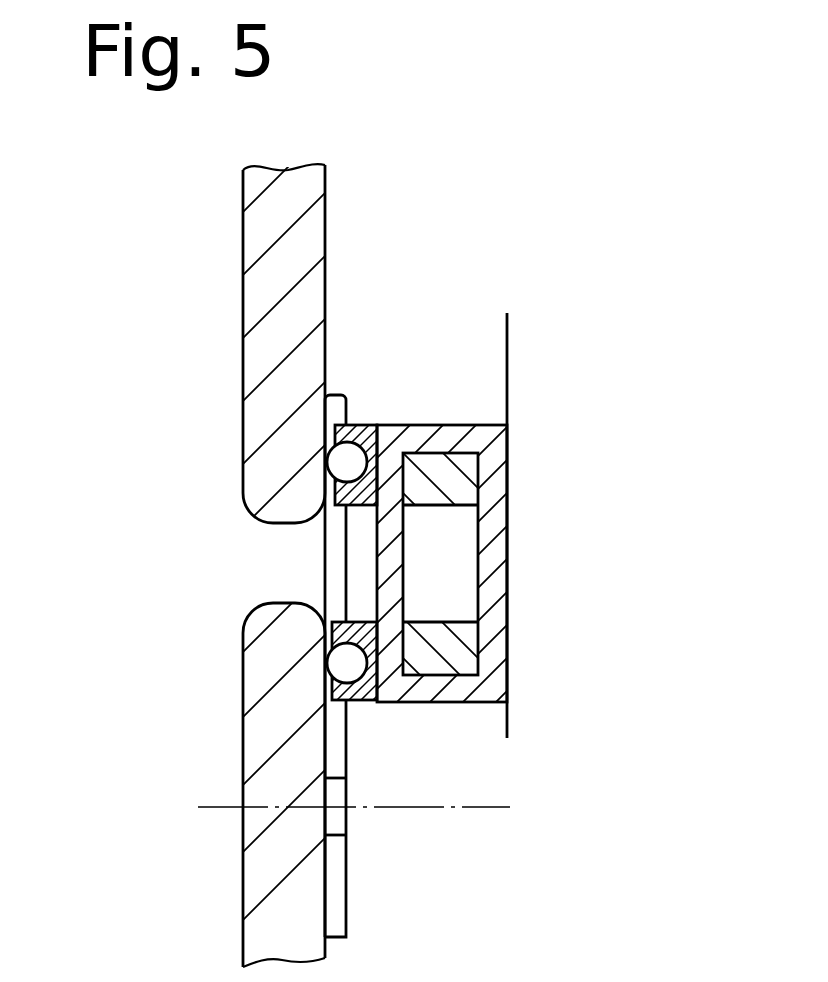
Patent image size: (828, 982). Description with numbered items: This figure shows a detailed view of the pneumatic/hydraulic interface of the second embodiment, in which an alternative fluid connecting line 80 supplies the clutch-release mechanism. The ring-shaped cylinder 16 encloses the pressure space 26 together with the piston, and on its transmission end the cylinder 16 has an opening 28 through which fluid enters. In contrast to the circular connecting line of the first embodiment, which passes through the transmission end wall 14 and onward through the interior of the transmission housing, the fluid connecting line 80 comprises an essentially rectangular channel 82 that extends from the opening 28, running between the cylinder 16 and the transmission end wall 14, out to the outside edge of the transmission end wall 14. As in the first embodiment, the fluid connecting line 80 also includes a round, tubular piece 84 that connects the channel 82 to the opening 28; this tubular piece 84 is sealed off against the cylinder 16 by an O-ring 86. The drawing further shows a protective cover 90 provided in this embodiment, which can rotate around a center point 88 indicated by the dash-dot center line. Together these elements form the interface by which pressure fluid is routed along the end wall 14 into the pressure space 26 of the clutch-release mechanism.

The end wall 14 is at (505, 368).
The cylinder 16 is at (263, 358).
The pressure space 26 is at (113, 525).
The opening 28 is at (283, 607).
The fluid connecting line 80 is at (487, 463).
The channel 82 is at (450, 578).
The tubular piece 84 is at (365, 428).
The O-ring 86 is at (347, 663).
The center point 88 is at (447, 808).
The protective cover 90 is at (347, 898).